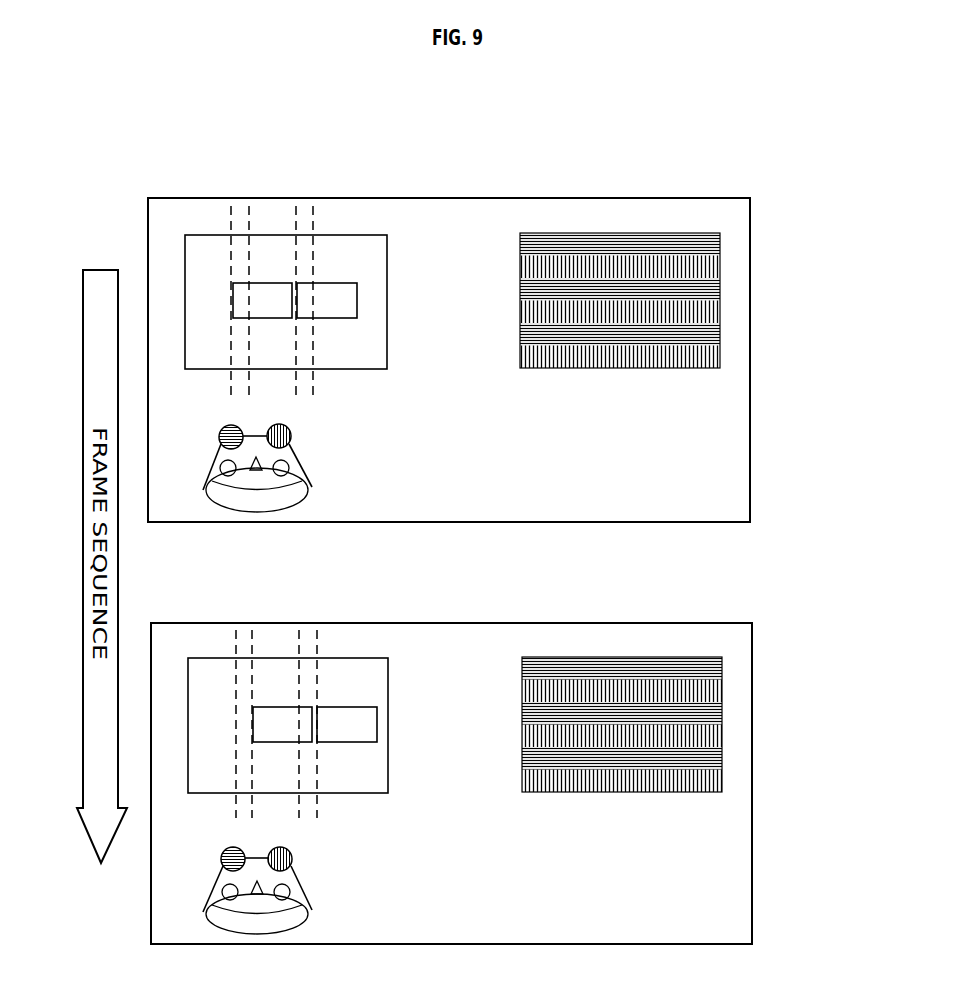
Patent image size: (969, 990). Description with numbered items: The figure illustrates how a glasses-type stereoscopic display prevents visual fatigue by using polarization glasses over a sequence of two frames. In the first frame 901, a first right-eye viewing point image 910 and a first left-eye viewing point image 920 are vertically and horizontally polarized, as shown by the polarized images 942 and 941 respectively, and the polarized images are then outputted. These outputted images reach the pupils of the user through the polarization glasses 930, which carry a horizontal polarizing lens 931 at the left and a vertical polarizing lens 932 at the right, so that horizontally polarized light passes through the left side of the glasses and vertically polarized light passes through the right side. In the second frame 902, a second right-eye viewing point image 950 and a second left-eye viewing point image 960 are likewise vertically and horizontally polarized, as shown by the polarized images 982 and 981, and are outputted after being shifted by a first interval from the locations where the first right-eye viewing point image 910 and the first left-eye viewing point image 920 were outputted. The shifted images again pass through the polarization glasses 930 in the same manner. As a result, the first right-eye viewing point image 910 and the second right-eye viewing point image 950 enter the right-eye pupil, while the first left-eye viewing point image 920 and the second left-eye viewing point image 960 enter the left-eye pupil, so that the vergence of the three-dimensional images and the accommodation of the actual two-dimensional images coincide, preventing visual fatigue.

The first frame 901 is at (448, 198).
The second frame 902 is at (452, 622).
The first right-eye viewing point image 910 is at (233, 300).
The first left-eye viewing point image 920 is at (326, 283).
The polarization glasses 930 is at (302, 455).
The horizontal polarizing lens 931 is at (222, 427).
The vertical polarizing lens 932 is at (288, 427).
The polarized image 941 is at (720, 240).
The polarized image 942 is at (715, 265).
The second right-eye viewing point image 950 is at (253, 725).
The second left-eye viewing point image 960 is at (345, 706).
The polarized image 981 is at (722, 664).
The polarized image 982 is at (718, 690).